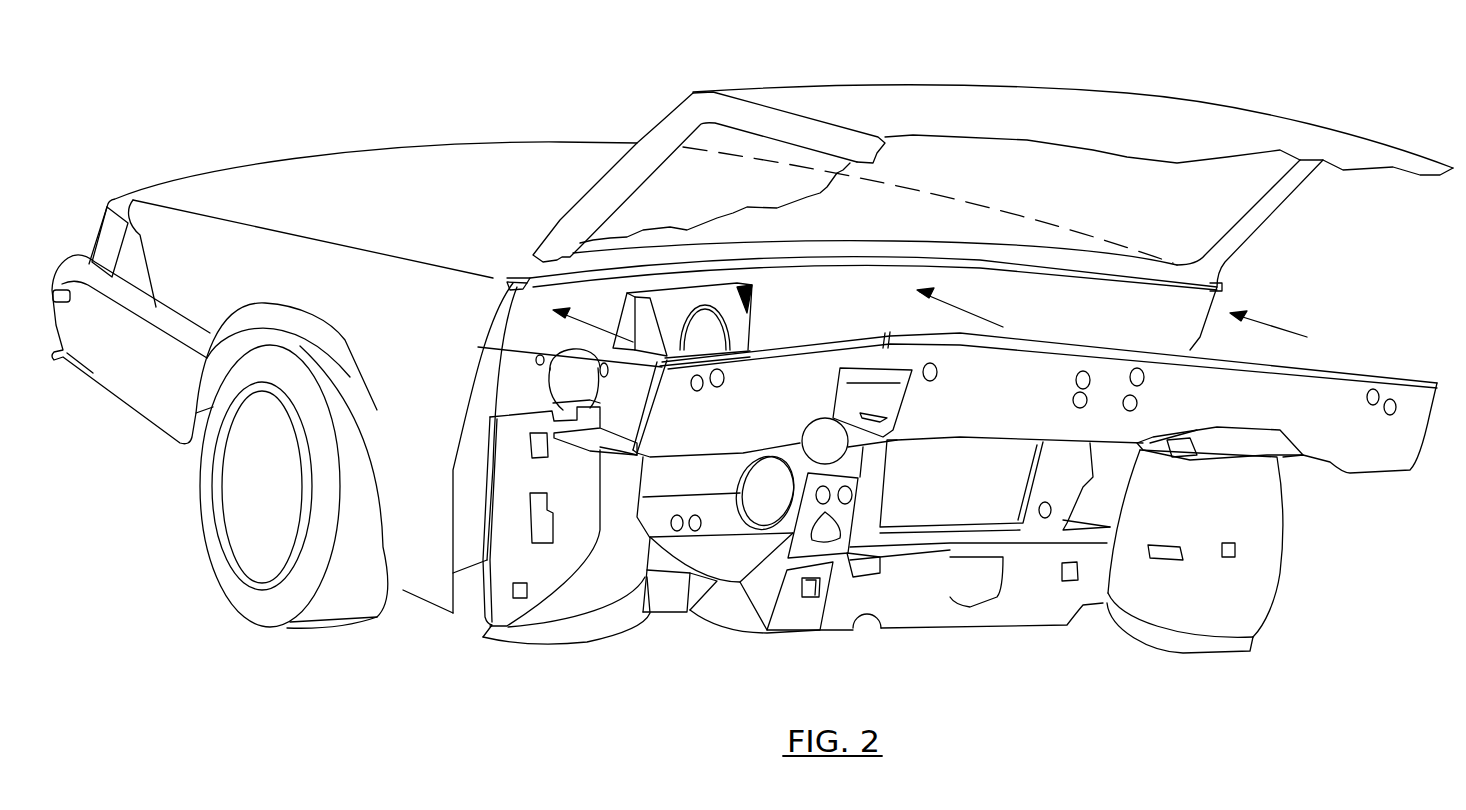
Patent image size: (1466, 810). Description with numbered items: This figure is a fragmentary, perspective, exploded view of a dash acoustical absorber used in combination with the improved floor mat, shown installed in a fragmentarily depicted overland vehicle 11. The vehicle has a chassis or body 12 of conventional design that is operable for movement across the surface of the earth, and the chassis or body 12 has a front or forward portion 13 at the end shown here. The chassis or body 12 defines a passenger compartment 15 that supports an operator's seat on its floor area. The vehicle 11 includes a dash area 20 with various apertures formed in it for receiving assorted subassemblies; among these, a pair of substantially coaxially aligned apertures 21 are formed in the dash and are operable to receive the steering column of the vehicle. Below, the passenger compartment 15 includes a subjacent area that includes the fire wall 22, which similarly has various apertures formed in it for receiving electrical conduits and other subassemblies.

The overland vehicle 11 is at (480, 181).
The chassis or body 12 is at (250, 250).
The front or forward portion 13 is at (343, 183).
The passenger compartment 15 is at (1360, 231).
The dash area 20 is at (1097, 318).
The coaxially aligned apertures 21 is at (550, 372).
The fire wall 22 is at (518, 386).